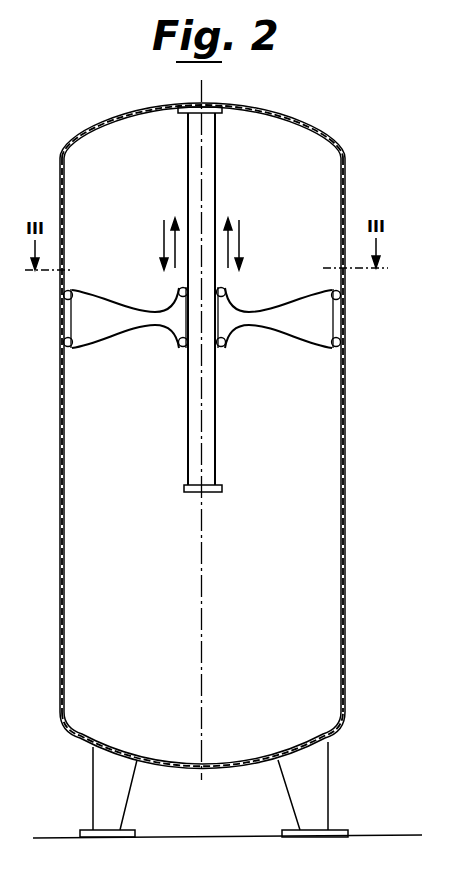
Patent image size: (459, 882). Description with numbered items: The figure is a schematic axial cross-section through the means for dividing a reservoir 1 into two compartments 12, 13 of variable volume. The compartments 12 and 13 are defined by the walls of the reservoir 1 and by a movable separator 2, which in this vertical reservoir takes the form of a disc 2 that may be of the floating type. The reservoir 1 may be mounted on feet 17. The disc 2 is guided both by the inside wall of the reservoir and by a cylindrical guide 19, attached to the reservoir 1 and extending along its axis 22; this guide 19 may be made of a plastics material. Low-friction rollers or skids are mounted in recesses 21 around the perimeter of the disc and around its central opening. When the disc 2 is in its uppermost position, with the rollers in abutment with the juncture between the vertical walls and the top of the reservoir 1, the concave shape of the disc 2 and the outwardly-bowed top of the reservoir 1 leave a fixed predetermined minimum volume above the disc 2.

The reservoir 1 is at (347, 677).
The separator 2 is at (307, 330).
The compartment 12 is at (318, 188).
The compartment 13 is at (320, 598).
The feet 17 is at (328, 795).
The cylindrical guide 19 is at (210, 137).
The recesses 21 is at (63, 291).
The axis 22 is at (206, 611).